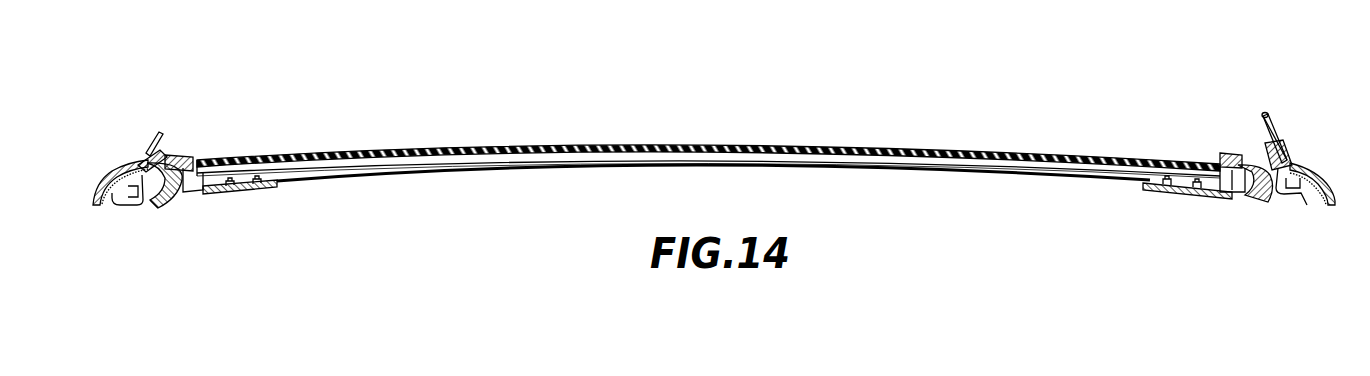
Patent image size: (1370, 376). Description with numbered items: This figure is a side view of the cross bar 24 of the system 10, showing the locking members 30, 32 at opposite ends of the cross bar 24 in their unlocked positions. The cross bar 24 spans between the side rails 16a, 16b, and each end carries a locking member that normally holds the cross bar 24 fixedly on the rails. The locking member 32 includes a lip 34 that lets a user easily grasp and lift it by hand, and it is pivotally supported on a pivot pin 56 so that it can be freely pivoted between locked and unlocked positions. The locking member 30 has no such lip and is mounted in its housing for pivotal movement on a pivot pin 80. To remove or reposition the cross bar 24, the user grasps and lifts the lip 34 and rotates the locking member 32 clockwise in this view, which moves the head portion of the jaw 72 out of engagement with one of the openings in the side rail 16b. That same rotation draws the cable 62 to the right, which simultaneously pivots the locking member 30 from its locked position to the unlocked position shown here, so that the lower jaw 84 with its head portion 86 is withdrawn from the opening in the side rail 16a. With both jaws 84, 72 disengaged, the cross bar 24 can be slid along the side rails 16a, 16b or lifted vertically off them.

The system 10 is at (1057, 62).
The side rail 16a is at (108, 165).
The side rail 16b is at (1326, 165).
The cross bar 24 is at (607, 150).
The locking member 30 is at (140, 147).
The locking member 32 is at (1282, 118).
The lip 34 is at (1262, 112).
The pivot pin 56 is at (1290, 152).
The cable 62 is at (410, 168).
The jaw 72 is at (1252, 200).
The pivot pin 80 is at (157, 160).
The lower jaw 84 is at (183, 193).
The head portion 86 is at (157, 205).